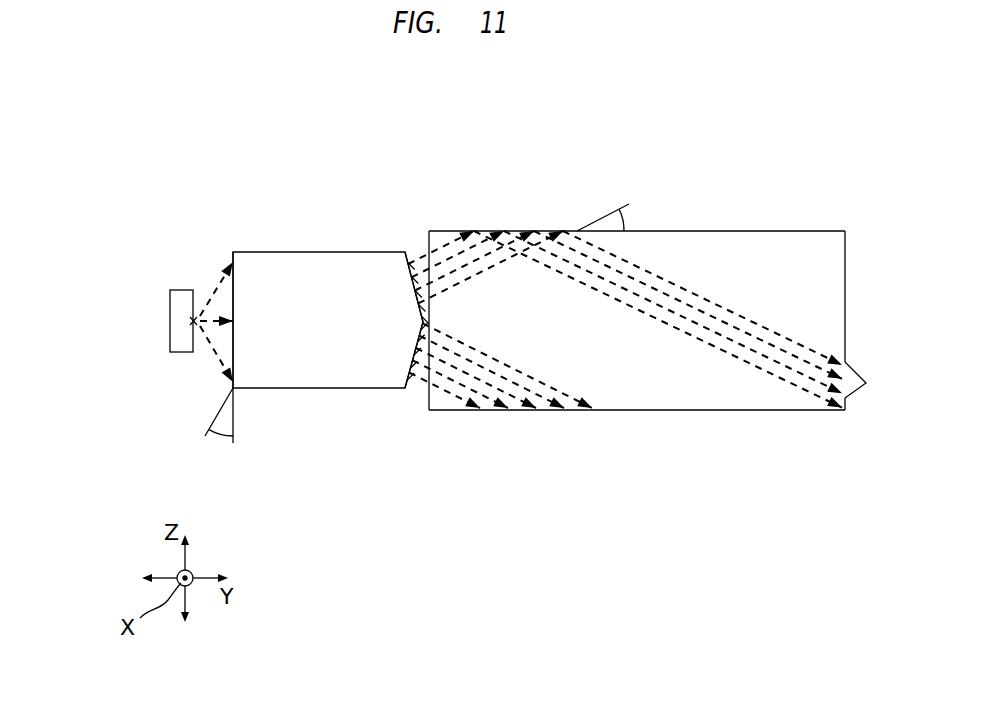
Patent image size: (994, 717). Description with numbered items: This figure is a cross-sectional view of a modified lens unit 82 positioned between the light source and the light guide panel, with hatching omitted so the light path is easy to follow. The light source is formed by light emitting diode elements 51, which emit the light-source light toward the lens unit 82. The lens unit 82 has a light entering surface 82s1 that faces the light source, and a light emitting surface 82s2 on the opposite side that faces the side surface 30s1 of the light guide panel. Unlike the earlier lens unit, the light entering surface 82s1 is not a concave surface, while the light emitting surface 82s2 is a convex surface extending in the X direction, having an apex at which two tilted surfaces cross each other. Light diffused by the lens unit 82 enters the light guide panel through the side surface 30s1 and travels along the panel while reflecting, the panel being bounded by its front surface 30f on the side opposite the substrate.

The lens unit 82 is at (297, 278).
The light entering surface 82s1 is at (222, 287).
The light emitting surface 82s2 is at (430, 260).
The front surface 30f is at (527, 220).
The side surface 30s1 is at (413, 409).
The light emitting diode element 51 is at (180, 322).